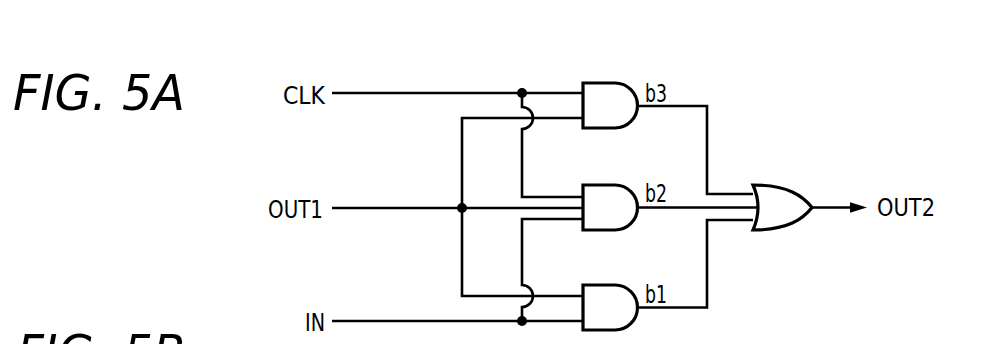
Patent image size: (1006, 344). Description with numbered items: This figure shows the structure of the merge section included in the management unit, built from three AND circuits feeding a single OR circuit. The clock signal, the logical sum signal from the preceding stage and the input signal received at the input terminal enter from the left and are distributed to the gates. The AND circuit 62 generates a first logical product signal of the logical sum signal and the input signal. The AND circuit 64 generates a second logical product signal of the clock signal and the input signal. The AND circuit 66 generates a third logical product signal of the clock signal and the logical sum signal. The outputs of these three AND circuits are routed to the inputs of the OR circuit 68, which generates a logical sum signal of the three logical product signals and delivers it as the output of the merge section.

The AND circuit 62 is at (606, 285).
The AND circuit 64 is at (606, 185).
The AND circuit 66 is at (606, 83).
The OR circuit 68 is at (798, 188).